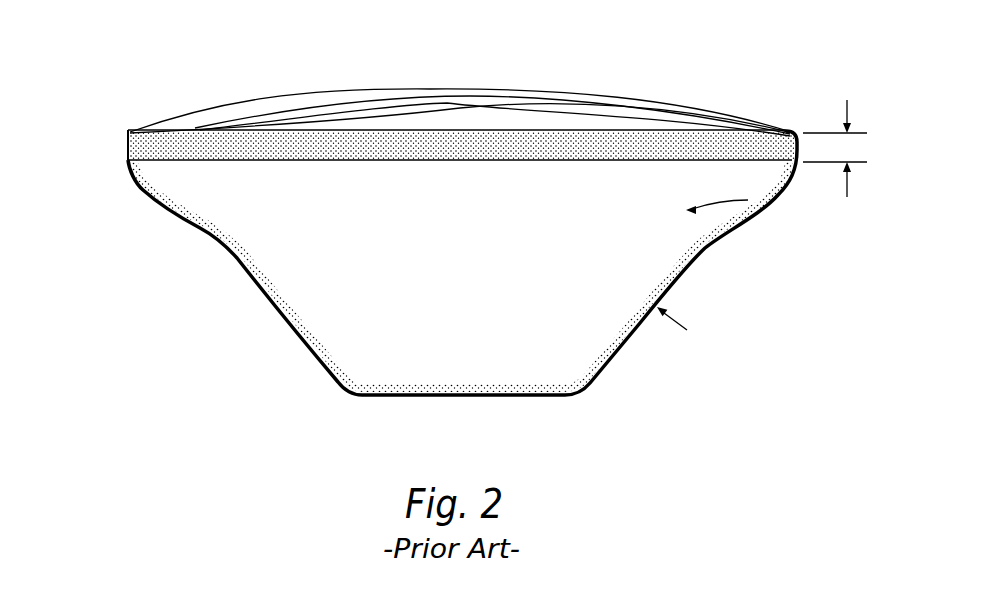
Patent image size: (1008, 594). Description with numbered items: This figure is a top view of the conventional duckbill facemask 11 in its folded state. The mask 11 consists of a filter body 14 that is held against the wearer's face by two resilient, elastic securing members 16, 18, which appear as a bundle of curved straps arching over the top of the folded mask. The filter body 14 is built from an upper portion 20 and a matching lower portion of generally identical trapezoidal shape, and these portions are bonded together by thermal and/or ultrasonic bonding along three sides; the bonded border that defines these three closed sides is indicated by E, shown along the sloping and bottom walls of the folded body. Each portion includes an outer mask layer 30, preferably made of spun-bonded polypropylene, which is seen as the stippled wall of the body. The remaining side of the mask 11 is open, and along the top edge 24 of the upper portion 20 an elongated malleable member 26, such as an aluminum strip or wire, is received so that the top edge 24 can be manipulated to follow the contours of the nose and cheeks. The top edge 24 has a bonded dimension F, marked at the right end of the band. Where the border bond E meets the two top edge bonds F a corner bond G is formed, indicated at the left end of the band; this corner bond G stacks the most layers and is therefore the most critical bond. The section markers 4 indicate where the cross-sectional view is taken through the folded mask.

The facemask 11 is at (232, 298).
The filter body 14 is at (648, 348).
The securing member 16 is at (347, 90).
The securing member 18 is at (610, 93).
The upper portion 20 is at (762, 208).
The top edge 24 is at (545, 134).
The malleable member 26 is at (387, 163).
The outer mask layer 30 is at (338, 315).
The section line 4- 4 is at (435, 73).
The top edge bond F is at (835, 137).
The corner bond G is at (118, 148).
The bonded border E is at (629, 287).